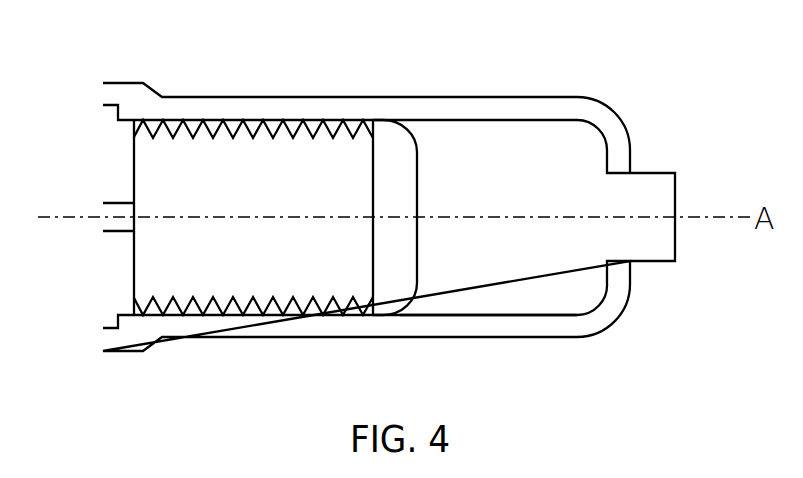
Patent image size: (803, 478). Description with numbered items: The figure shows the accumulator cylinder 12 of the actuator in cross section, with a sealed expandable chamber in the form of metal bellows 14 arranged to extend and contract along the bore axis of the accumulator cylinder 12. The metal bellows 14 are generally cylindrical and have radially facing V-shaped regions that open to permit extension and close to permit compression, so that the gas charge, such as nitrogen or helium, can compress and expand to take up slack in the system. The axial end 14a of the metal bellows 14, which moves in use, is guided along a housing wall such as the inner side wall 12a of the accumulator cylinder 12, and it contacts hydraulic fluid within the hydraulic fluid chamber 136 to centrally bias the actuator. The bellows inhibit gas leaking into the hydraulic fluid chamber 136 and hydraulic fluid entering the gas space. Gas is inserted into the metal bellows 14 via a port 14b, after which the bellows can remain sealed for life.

The accumulator cylinder 12 is at (408, 187).
The inner side wall 12a is at (532, 315).
The hydraulic fluid chamber 136 is at (537, 147).
The metal bellows 14 is at (261, 180).
The axial end 14a is at (405, 243).
The port 14b is at (120, 222).